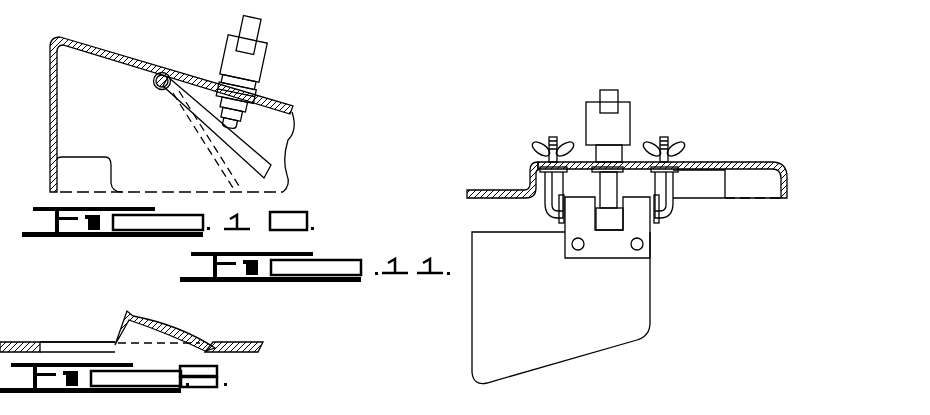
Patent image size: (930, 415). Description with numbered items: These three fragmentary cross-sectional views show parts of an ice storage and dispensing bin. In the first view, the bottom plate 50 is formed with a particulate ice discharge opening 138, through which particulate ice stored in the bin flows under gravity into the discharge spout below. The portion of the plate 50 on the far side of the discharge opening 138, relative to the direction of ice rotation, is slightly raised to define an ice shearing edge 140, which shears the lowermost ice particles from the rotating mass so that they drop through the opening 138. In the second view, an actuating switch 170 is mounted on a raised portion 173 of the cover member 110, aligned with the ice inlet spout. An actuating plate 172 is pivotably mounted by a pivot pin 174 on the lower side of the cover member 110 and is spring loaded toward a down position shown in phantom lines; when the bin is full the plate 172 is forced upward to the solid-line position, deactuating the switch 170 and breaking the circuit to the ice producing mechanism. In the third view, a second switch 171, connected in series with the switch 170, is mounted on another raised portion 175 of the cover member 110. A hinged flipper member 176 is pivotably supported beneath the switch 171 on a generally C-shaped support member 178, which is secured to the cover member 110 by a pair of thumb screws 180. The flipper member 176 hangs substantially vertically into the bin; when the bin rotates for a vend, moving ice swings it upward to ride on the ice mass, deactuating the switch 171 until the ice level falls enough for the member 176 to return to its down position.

In FIG. 10, the raised portion of the cover member 173 is at (130, 44).
In FIG. 10, the pivot pin 174 is at (152, 88).
In FIG. 10, the actuating plate 172 is at (255, 146).
In FIG. 10, the actuating switch 170 is at (278, 55).
In FIG. 11, the flipper member 176 is at (654, 302).
In FIG. 11, the raised portion of the cover member 175 is at (753, 162).
In FIG. 11, the cover member 110 is at (485, 187).
In FIG. 11, the switch 171 is at (578, 112).
In FIG. 11, the C-shaped support member 178 is at (672, 216).
In FIG. 11, the thumb screws 180 is at (530, 143).
In FIG. 6, the plate 50 is at (233, 344).
In FIG. 6, the ice shearing edge 140 is at (132, 313).
In FIG. 6, the particulate ice discharge opening 138 is at (50, 341).